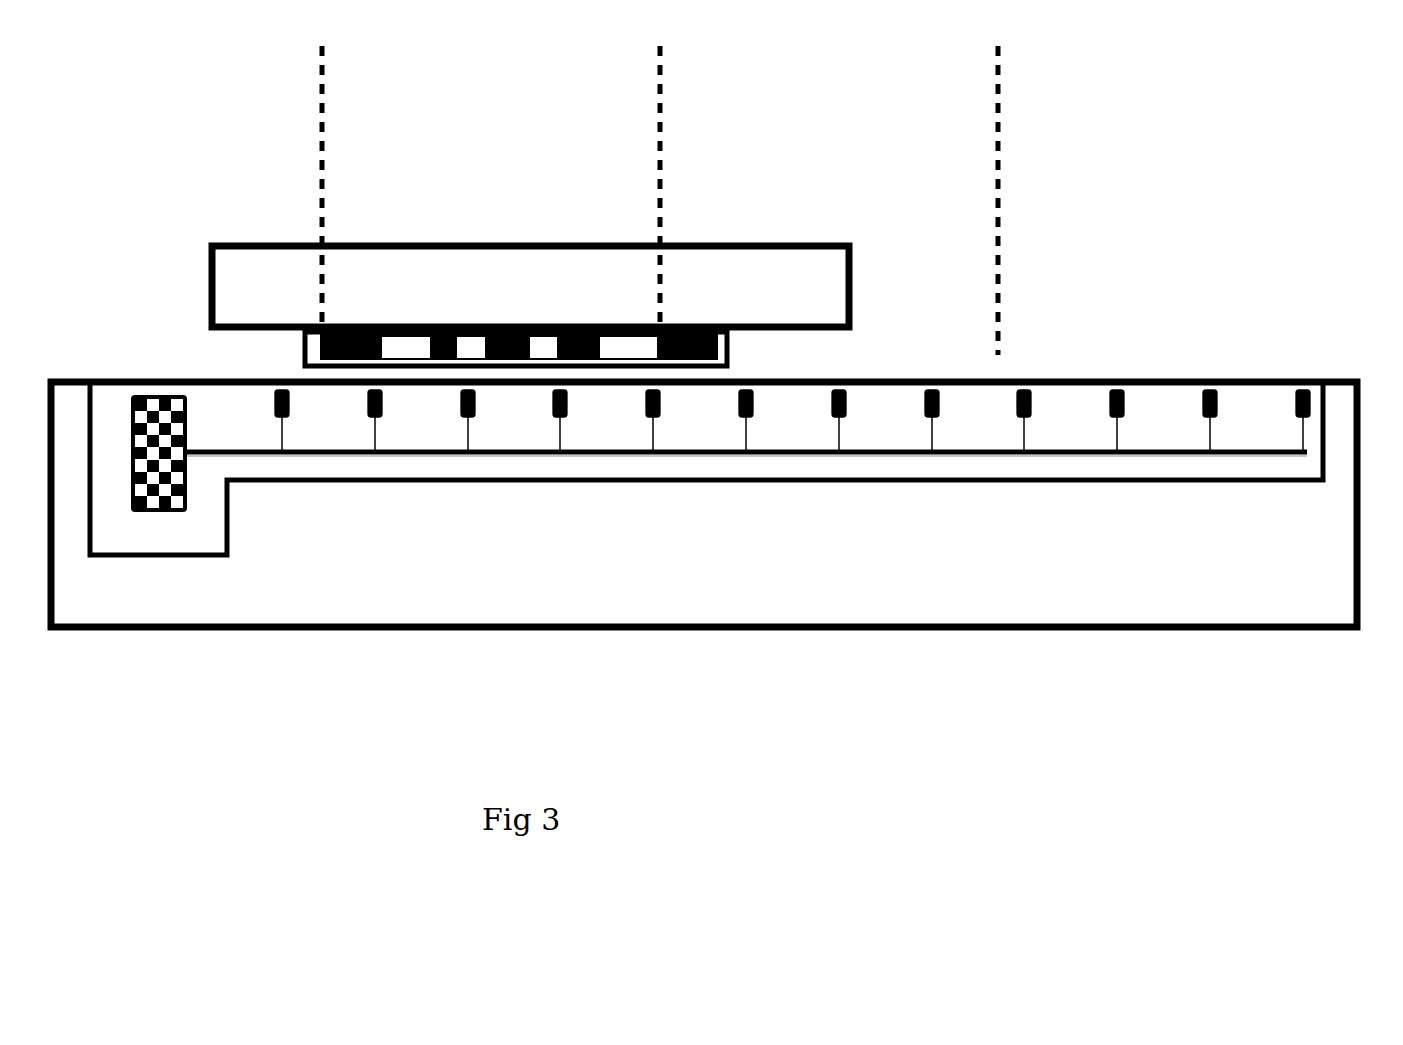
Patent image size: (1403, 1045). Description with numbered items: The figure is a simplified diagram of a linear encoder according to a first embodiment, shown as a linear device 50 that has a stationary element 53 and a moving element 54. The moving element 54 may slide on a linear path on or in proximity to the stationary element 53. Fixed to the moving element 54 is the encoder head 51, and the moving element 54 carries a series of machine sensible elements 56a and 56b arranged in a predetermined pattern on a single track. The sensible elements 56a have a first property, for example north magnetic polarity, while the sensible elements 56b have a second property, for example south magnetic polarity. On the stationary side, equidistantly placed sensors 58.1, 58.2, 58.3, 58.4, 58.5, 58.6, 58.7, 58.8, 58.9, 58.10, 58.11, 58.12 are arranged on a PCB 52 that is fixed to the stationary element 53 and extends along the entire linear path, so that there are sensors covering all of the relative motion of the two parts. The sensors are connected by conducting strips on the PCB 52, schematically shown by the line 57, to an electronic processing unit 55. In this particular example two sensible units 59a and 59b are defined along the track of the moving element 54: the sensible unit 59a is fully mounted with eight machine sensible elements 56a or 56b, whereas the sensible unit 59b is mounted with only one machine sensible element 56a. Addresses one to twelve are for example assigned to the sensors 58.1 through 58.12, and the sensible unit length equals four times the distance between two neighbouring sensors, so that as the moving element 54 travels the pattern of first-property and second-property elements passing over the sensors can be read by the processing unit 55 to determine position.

The linear device 50 is at (143, 193).
The encoder head 51 is at (303, 347).
The PCB 52 is at (803, 472).
The stationary element 53 is at (1090, 567).
The moving element 54 is at (677, 270).
The electronic processing unit 55 is at (165, 513).
The machine sensible elements having a first property 56a is at (673, 323).
The machine sensible elements having a second property 56b is at (413, 337).
The line representing conducting strips 57 is at (628, 455).
The sensor 58.1 is at (292, 424).
The sensor 58.2 is at (385, 424).
The sensor 58.3 is at (478, 424).
The sensor 58.4 is at (570, 424).
The sensor 58.5 is at (663, 424).
The sensor 58.6 is at (756, 424).
The sensor 58.7 is at (849, 424).
The sensor 58.8 is at (942, 424).
The sensor 58.9 is at (1034, 424).
The sensor 58.10 is at (1127, 424).
The sensor 58.11 is at (1220, 424).
The sensor 58.12 is at (1313, 424).
The sensible unit 59a is at (660, 108).
The sensible unit 59b is at (998, 108).